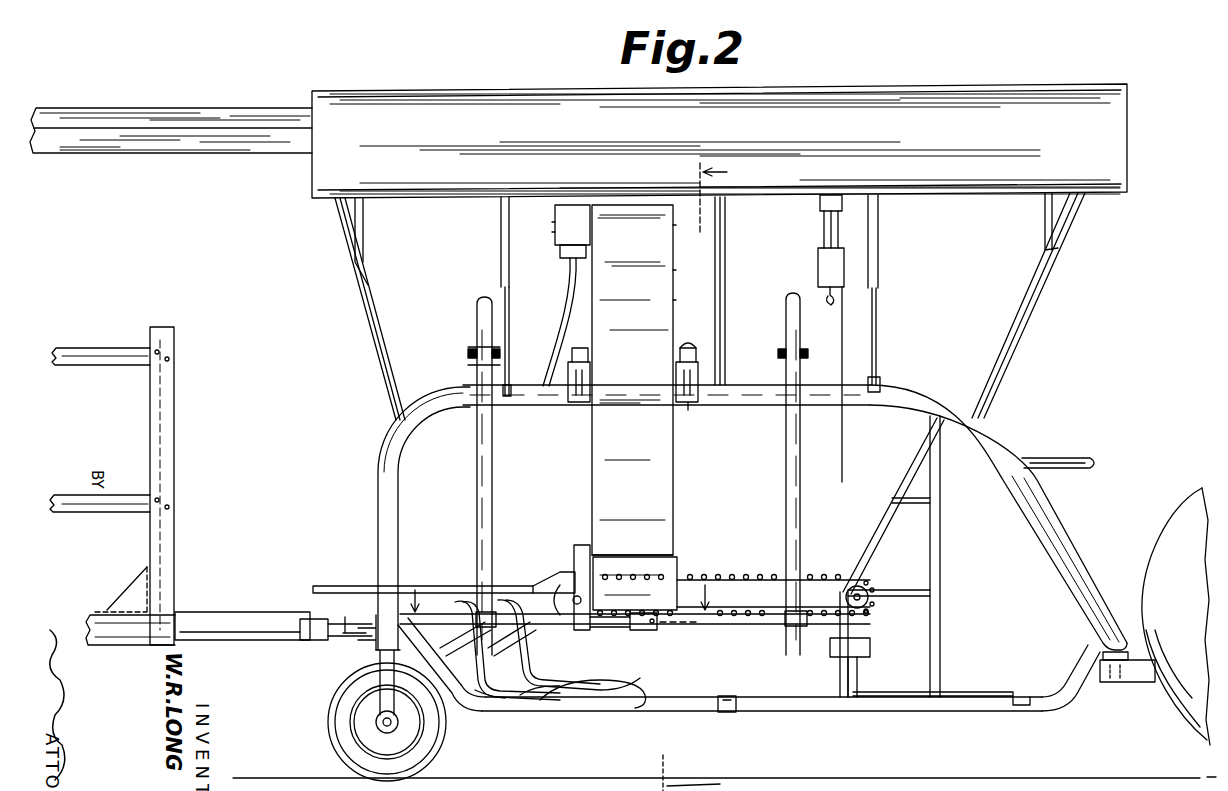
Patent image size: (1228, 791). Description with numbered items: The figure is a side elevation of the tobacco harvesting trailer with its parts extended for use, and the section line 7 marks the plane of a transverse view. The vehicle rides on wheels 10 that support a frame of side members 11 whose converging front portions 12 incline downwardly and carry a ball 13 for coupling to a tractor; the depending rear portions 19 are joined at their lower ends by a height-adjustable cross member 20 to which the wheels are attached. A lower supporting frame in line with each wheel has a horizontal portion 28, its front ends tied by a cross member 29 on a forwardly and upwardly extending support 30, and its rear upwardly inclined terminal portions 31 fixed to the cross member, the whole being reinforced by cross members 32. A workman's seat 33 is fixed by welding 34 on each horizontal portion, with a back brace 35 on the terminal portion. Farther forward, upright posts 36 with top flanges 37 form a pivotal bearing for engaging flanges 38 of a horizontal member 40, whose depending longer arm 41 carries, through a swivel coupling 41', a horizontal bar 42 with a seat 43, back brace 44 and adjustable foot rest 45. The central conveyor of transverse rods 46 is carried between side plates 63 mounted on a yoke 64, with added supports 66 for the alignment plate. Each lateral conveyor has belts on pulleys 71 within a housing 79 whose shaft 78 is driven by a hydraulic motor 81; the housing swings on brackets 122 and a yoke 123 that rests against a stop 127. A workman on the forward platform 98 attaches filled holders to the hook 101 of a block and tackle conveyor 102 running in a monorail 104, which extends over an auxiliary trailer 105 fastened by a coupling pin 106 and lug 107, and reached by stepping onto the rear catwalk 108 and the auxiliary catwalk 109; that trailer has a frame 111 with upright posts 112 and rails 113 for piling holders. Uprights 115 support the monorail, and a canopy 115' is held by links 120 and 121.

The section line 7 is at (720, 193).
The wheels 10 is at (328, 715).
The side members 11 is at (752, 387).
The converging front portions 12 is at (1055, 500).
The ball 13 is at (1112, 683).
The depending rear portions 19 is at (400, 505).
The cross member 20 is at (362, 640).
The horizontal portion 28 is at (790, 713).
The cross member 29 is at (922, 713).
The support 30 is at (1067, 703).
The upwardly inclined terminal portions 31 is at (465, 712).
The cross members 32 is at (593, 713).
The workman's seat 33 is at (545, 712).
The welding 34 is at (505, 712).
The back brace 35 is at (442, 651).
The upright posts 36 is at (475, 368).
The top flanges 37 is at (468, 354).
The flanges 38 is at (470, 349).
The horizontal member 40 is at (788, 296).
The depending longer arm 41 is at (614, 485).
The swivel coupling 41' is at (626, 606).
The horizontal bar 42 is at (652, 712).
The seat 43 is at (525, 674).
The back brace 44 is at (522, 640).
The foot rest 45 is at (730, 714).
The transverse rods 46 is at (722, 580).
The side plates 63 is at (622, 594).
The yoke 64 is at (595, 633).
The added supports 66 is at (585, 572).
The pulleys 71 is at (640, 553).
The shaft 78 is at (676, 228).
The housing 79 is at (674, 265).
The hydraulic motor 81 is at (556, 216).
The forward platform 98 is at (988, 692).
The hook 101 is at (825, 303).
The block and tackle conveyor 102 is at (818, 262).
The monorail 104 is at (130, 152).
The auxiliary trailer 105 is at (172, 645).
The coupling pin 106 is at (338, 640).
The lug 107 is at (348, 620).
The rear platform or catwalk 108 is at (352, 587).
The platform or catwalk 109 is at (220, 600).
The frame 111 is at (108, 610).
The upright posts 112 is at (166, 442).
The horizontal rails or runners 113 is at (120, 496).
The uprights 115 is at (692, 306).
The roof or canopy 115' is at (747, 141).
The link 120 is at (878, 254).
The link 121 is at (878, 333).
The brackets 122 is at (700, 370).
The yoke 123 is at (688, 345).
The stop or bracket 127 is at (692, 405).